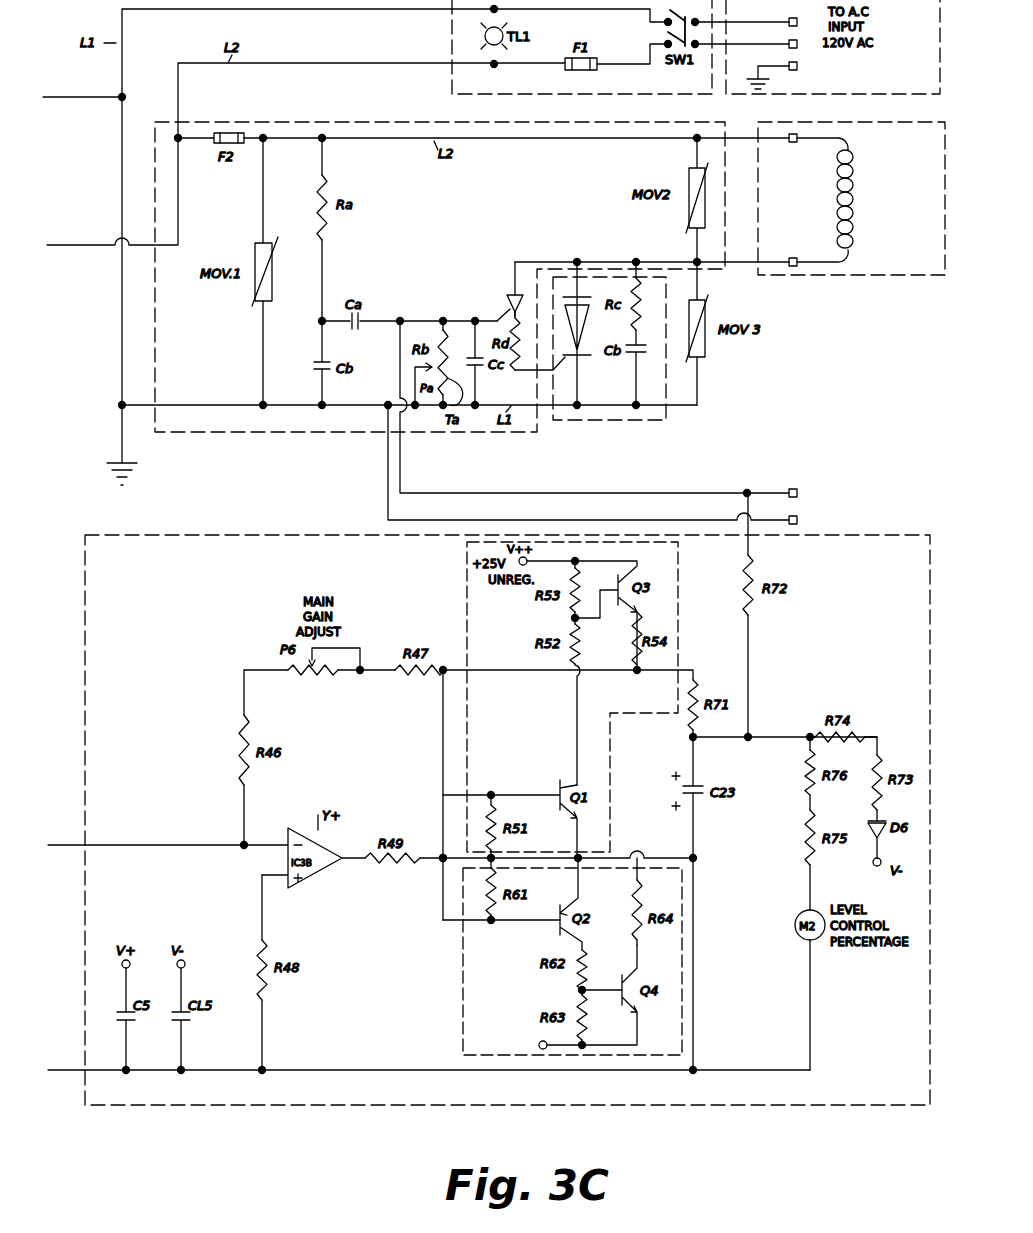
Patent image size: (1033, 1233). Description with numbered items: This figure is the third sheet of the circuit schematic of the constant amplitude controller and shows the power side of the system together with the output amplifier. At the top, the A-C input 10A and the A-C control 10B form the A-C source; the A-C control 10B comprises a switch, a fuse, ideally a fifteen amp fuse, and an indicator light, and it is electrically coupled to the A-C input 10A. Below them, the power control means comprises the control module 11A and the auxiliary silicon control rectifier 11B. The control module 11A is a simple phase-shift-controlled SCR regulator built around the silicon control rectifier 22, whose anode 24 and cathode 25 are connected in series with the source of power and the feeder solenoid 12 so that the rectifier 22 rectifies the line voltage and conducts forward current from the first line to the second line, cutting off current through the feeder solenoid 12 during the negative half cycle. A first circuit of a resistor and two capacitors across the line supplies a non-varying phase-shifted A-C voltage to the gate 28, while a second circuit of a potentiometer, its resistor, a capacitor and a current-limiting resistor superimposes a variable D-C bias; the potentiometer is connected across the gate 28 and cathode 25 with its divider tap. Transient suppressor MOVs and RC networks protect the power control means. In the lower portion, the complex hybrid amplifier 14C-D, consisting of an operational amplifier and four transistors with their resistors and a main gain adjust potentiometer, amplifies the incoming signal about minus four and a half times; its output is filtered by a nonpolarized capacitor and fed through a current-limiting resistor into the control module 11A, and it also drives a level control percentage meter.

The A-C input 10A is at (876, 94).
The A-C control 10B is at (656, 95).
The control module 11A is at (256, 433).
The auxiliary silicon control rectifier 11B is at (614, 430).
The feeder solenoid 12 is at (878, 276).
The silicon control rectifier 22 is at (510, 297).
The anode 24 is at (517, 270).
The cathode 25 is at (506, 310).
The gate 28 is at (492, 318).
The complex hybrid amplifier 14C-D is at (429, 1114).